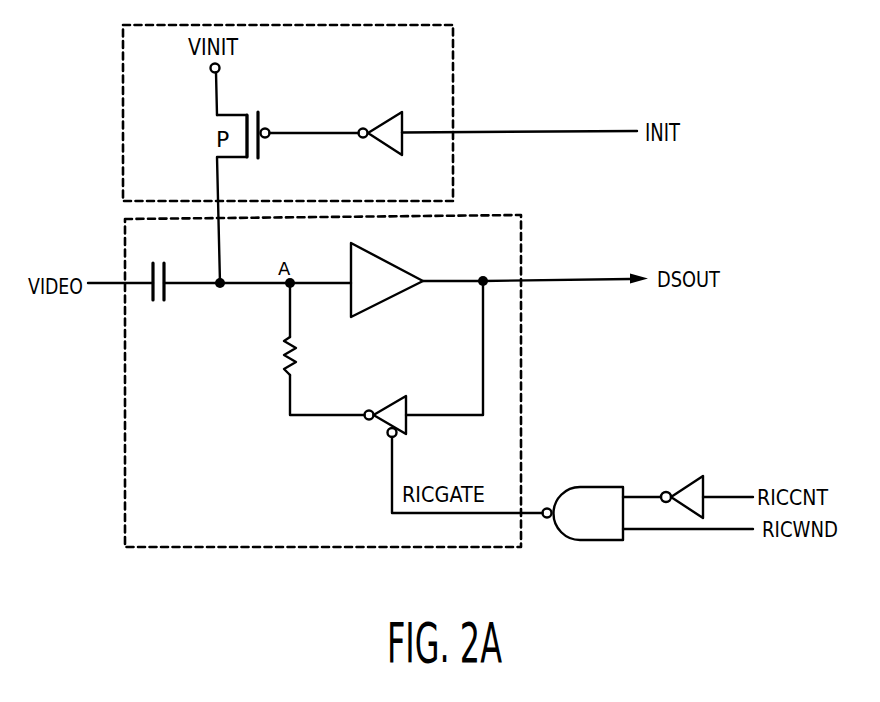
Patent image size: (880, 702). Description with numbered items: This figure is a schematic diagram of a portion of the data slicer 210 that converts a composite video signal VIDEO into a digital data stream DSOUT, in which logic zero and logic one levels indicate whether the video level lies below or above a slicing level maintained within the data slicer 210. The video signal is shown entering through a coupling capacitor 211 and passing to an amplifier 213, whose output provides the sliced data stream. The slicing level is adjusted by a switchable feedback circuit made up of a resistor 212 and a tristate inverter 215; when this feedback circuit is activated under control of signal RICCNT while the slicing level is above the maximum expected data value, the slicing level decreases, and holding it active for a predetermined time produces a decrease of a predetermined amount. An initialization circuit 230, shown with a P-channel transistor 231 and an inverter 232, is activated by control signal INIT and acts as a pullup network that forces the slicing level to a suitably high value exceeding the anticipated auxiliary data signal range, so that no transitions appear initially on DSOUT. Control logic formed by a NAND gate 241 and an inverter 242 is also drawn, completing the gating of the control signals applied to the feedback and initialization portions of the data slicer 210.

The data slicer 210 is at (188, 522).
The coupling capacitor 211 is at (166, 303).
The resistor 212 is at (283, 350).
The amplifier 213 is at (387, 255).
The tristate inverter 215 is at (393, 397).
The initialization circuit 230 is at (437, 59).
The P-channel transistor 231 is at (230, 112).
The inverter 232 is at (395, 110).
The NAND gate 241 is at (588, 492).
The inverter 242 is at (682, 485).